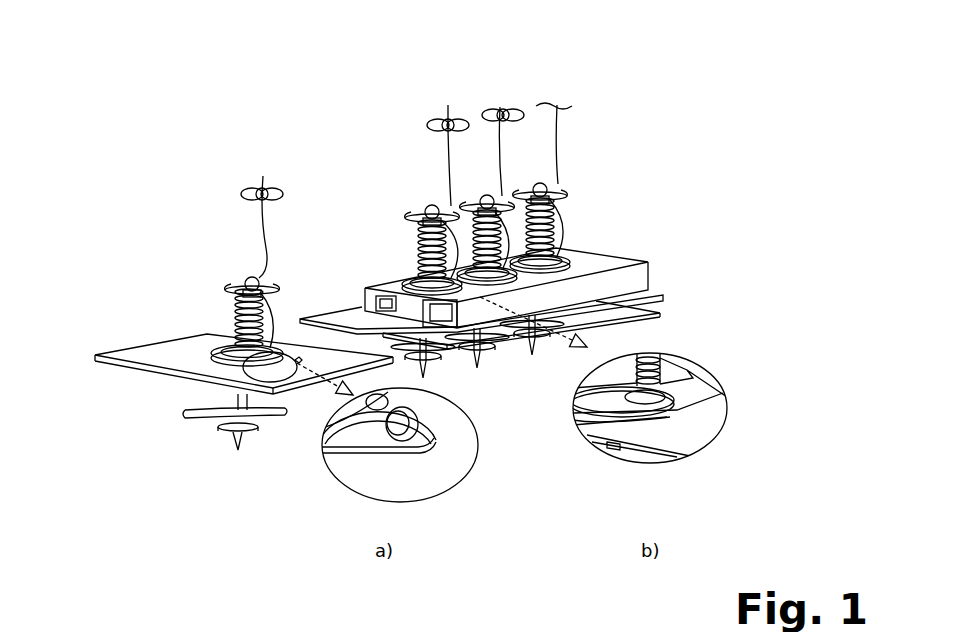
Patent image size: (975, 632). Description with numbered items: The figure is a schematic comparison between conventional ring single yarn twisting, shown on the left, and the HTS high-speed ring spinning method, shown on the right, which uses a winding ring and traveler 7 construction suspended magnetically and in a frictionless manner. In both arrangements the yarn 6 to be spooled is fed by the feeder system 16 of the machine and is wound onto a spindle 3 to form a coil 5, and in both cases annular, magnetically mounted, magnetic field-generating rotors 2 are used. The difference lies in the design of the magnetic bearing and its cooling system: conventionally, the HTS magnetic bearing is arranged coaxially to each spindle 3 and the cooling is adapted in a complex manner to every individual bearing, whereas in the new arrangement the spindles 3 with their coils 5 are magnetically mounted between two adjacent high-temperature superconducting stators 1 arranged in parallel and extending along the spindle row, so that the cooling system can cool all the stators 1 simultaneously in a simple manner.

The stator 1 is at (577, 245).
The rotor 2 is at (223, 343).
The spindle 3 is at (253, 281).
The coil 5 is at (237, 315).
The yarn 6 is at (450, 190).
The traveler 7 is at (425, 425).
The feeder system 16 is at (253, 190).